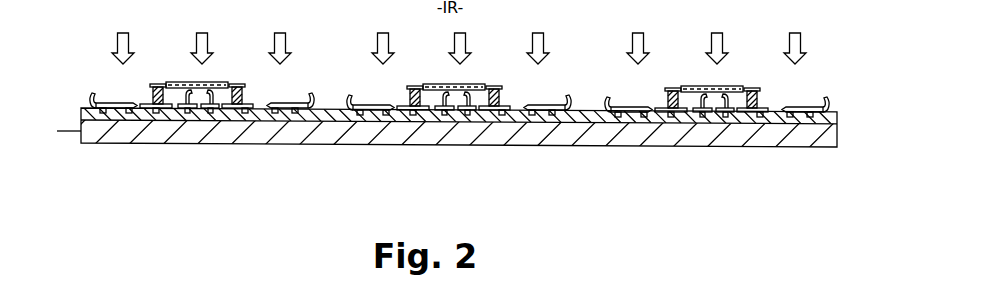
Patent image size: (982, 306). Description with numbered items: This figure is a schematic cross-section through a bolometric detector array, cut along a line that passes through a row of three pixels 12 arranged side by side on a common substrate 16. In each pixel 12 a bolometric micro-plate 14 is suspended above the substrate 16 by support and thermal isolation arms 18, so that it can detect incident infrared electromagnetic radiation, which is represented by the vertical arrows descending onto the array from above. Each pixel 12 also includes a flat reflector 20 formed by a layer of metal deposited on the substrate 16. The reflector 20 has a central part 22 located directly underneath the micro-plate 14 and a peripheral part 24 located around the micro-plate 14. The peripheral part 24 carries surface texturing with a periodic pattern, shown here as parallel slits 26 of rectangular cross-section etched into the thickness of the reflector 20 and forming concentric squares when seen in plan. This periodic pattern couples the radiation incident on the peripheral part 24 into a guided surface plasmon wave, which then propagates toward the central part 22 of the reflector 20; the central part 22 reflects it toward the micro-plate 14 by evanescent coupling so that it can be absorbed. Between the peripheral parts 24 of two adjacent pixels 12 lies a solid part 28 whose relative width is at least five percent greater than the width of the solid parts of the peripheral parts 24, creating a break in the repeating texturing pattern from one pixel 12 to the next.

The pixel 12 is at (182, 143).
The bolometric micro-plate 14 is at (223, 82).
The substrate 16 is at (57, 131).
The support and thermal isolation arms 18 is at (153, 90).
The flat reflector 20 is at (735, 113).
The central part 22 is at (223, 108).
The peripheral part 24 is at (290, 108).
The parallel slits 26 is at (103, 113).
The solid part 28 is at (343, 112).